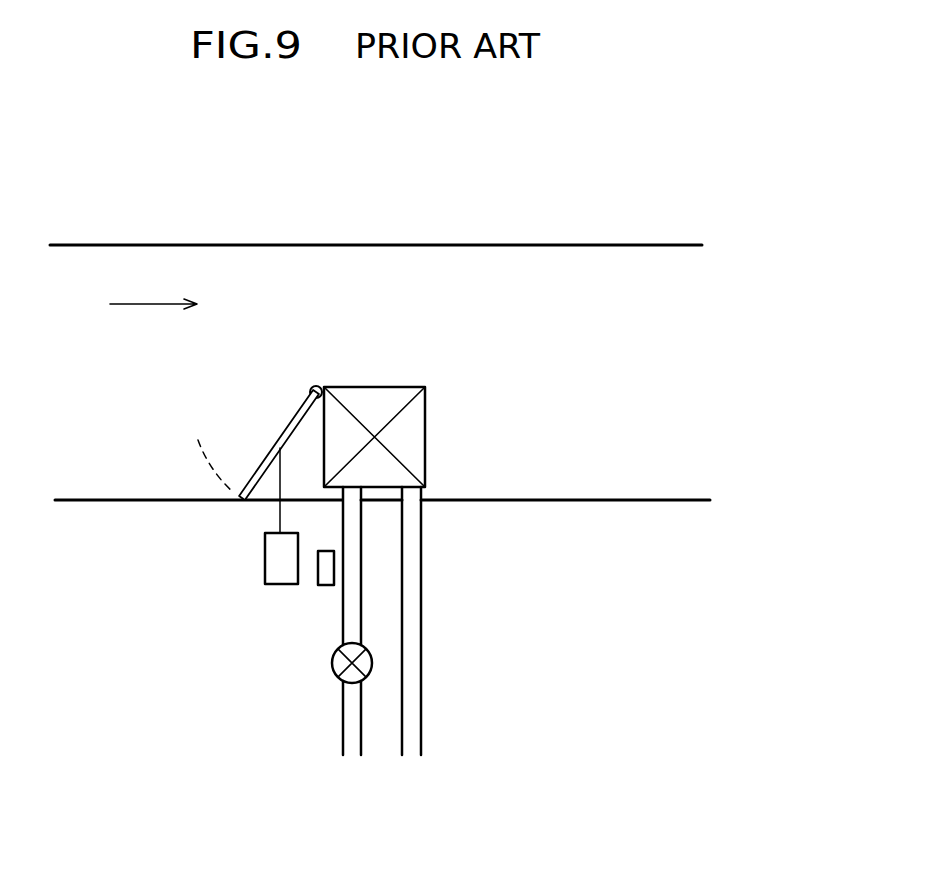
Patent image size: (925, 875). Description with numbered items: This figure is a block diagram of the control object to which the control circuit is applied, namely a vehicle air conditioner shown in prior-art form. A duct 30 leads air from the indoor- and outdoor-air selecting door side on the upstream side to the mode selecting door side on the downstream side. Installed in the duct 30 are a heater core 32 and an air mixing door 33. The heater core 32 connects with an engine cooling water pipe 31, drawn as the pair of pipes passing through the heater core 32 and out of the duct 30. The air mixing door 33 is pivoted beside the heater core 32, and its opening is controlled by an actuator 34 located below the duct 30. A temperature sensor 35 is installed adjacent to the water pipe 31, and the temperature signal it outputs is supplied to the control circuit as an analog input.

The duct 30 is at (387, 245).
The engine cooling water pipe 31 is at (421, 575).
The heater core 32 is at (425, 420).
The air mixing door 33 is at (257, 462).
The actuator 34 is at (265, 560).
The temperature sensor 35 is at (318, 585).